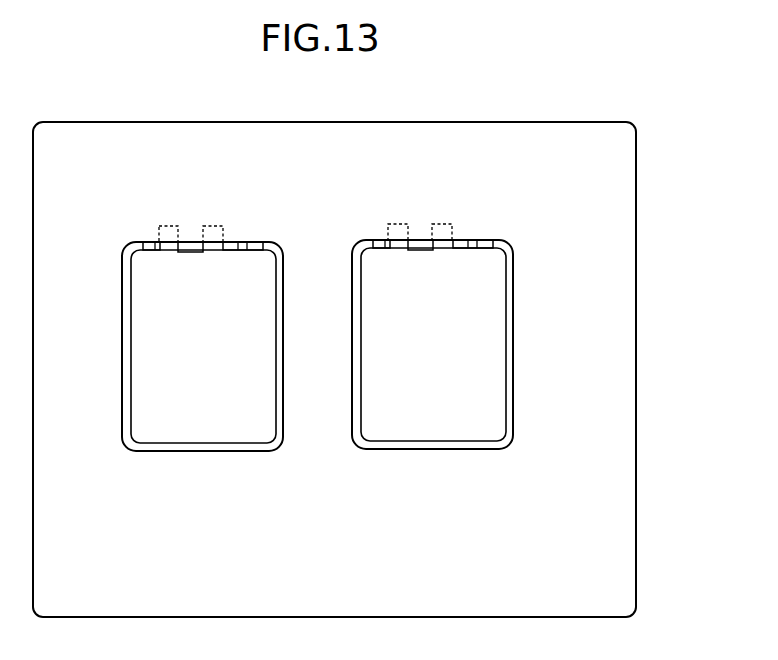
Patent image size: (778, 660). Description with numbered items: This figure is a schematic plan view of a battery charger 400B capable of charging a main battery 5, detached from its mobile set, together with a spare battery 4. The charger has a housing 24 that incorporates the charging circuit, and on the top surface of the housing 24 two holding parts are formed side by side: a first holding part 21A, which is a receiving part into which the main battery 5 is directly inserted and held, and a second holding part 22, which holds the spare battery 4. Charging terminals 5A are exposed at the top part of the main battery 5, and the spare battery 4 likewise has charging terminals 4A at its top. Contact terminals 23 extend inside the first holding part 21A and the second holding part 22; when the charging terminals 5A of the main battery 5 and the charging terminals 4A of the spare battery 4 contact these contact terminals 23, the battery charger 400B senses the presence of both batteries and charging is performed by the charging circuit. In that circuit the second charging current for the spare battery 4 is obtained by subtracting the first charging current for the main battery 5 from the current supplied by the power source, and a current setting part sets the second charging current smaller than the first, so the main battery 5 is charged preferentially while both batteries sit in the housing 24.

The battery charger 400B is at (614, 97).
The housing 24 is at (636, 243).
The contact terminals 23 is at (380, 238).
The main battery 5 is at (173, 376).
The spare battery 4 is at (461, 375).
The charging terminals 5A is at (240, 251).
The charging terminals 4A is at (470, 249).
The first holding part 21A is at (233, 451).
The second holding part 22 is at (462, 449).